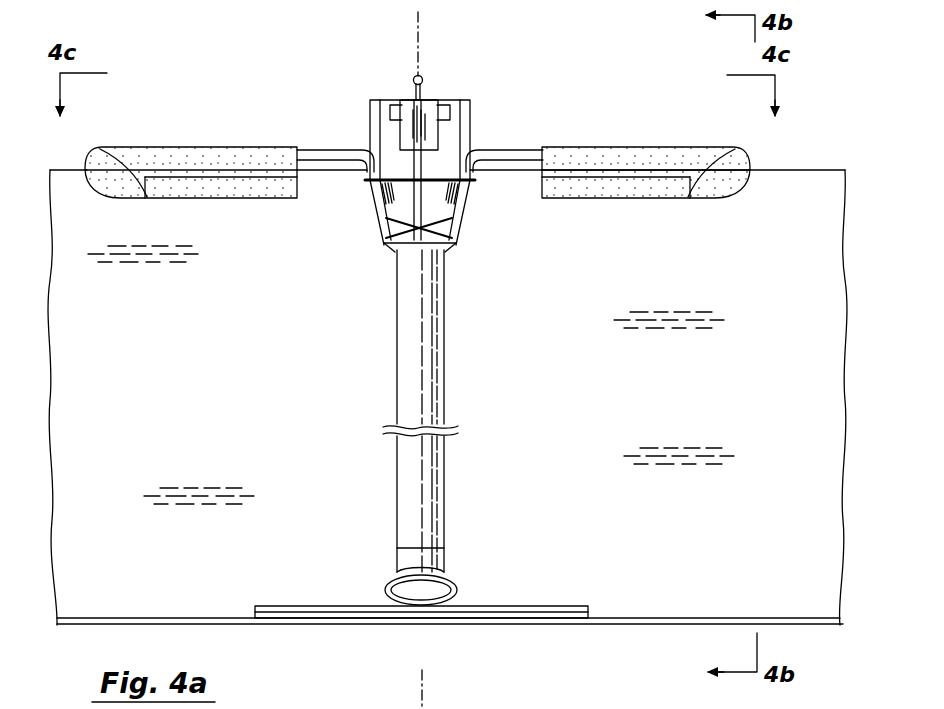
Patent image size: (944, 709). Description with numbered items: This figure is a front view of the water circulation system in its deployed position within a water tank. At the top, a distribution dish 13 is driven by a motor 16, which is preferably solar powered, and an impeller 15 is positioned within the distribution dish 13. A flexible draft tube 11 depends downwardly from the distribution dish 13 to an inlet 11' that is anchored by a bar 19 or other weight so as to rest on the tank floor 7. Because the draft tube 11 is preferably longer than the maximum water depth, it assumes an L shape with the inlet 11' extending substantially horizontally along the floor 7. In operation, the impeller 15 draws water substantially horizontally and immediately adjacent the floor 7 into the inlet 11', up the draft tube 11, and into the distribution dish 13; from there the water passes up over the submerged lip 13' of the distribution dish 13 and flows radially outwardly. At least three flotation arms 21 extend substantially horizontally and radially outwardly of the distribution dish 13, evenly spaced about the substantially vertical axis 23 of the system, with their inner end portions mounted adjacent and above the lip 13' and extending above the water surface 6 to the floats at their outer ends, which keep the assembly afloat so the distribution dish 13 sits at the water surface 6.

The water surface 6 is at (793, 170).
The floor 7 is at (703, 618).
The draft tube 11 is at (378, 411).
The inlet 11' is at (451, 558).
The distribution dish 13 is at (372, 224).
The lip 13' is at (457, 203).
The impeller 15 is at (455, 235).
The motor 16 is at (445, 100).
The bar 19 is at (516, 607).
The flotation arm 21 is at (216, 147).
The vertical axis 23 is at (420, 14).